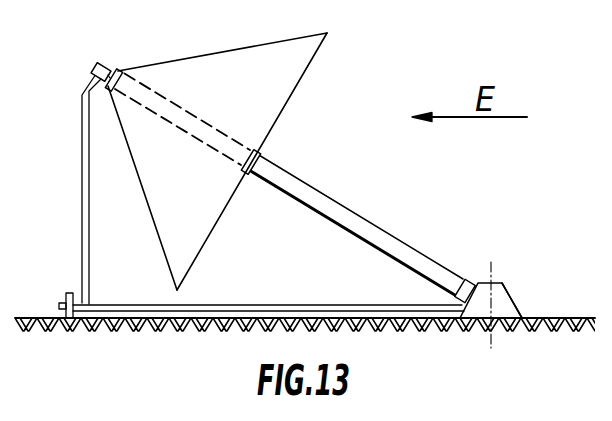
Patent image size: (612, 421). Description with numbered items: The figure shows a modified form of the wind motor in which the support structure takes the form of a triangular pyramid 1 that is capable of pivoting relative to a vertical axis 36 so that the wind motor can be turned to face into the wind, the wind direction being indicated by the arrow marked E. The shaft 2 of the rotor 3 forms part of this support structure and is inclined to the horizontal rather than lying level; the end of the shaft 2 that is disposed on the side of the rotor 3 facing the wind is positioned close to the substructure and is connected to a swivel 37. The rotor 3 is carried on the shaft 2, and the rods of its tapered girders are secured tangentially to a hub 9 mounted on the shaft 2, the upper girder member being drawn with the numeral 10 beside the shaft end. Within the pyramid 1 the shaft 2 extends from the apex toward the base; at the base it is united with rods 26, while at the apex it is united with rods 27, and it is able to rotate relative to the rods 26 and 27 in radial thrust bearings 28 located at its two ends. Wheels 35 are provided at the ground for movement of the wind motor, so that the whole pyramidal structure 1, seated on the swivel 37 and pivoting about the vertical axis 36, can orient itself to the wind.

The support structure 1 is at (73, 190).
The shaft 2 is at (114, 68).
The rotor 3 is at (217, 147).
The hub 9 is at (260, 151).
The upper spar 10 is at (123, 69).
The rods 26 is at (313, 305).
The rods 27 is at (83, 198).
The radial thrust bearings 28 is at (95, 63).
The wheels 35 is at (67, 294).
The vertical axis 36 is at (513, 289).
The swivel 37 is at (518, 290).